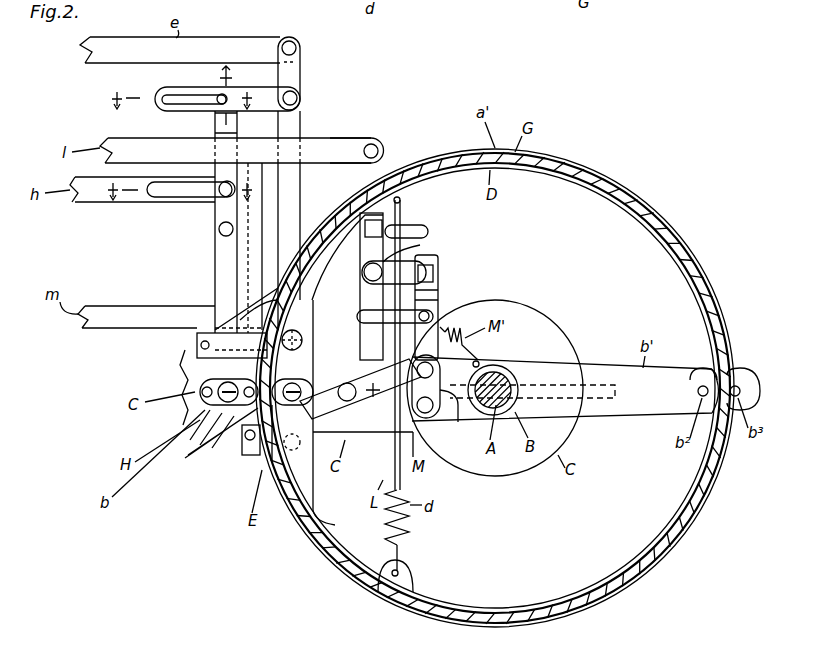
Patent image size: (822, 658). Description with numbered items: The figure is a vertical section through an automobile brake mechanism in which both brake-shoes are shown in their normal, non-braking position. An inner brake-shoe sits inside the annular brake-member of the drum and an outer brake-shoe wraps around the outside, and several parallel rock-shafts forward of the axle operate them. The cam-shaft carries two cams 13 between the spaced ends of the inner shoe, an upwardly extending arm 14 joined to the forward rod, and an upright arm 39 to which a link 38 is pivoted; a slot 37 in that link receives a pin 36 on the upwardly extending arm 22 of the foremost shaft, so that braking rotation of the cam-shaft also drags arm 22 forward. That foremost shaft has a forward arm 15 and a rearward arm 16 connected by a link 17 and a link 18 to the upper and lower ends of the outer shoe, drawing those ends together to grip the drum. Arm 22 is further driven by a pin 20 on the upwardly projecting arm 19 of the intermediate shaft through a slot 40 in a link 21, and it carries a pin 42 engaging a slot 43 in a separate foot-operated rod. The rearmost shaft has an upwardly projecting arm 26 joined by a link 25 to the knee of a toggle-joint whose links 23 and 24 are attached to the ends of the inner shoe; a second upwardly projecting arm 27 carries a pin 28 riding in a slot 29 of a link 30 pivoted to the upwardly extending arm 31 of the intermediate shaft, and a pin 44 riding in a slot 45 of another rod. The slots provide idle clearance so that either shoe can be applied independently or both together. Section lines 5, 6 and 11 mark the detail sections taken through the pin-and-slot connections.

The upwardly extending arm 14 is at (303, 67).
The slot 37 is at (168, 96).
The pin 36 is at (219, 103).
The link 38 is at (160, 106).
The upright arm 39 is at (292, 126).
The section line 6— 6 is at (176, 101).
The section line 5— 5 is at (226, 99).
The section line 11— 11 is at (182, 189).
The pin 42 is at (238, 195).
The slot 43 is at (176, 197).
The upwardly projecting arm 19 is at (363, 178).
The upwardly extending arm 22 is at (215, 266).
The link 21 is at (263, 240).
The link 17 is at (192, 362).
The cam 13 is at (305, 398).
The forward arm 15 is at (210, 406).
The rearward arm 16 is at (222, 432).
The link 18 is at (245, 442).
The toggle-joint link 23 is at (325, 353).
The pin 20 is at (366, 236).
The upwardly extending arm 31 is at (365, 289).
The slot 29 is at (434, 265).
The pin 28 is at (432, 275).
The upwardly projecting arm 27 is at (438, 300).
The link 30 is at (400, 258).
The slot 45 is at (381, 323).
The slot 40 is at (410, 223).
The toggle-joint link 24 is at (375, 437).
The link 25 is at (355, 383).
The upwardly projecting arm 26 is at (448, 420).
The pin 44 is at (470, 307).